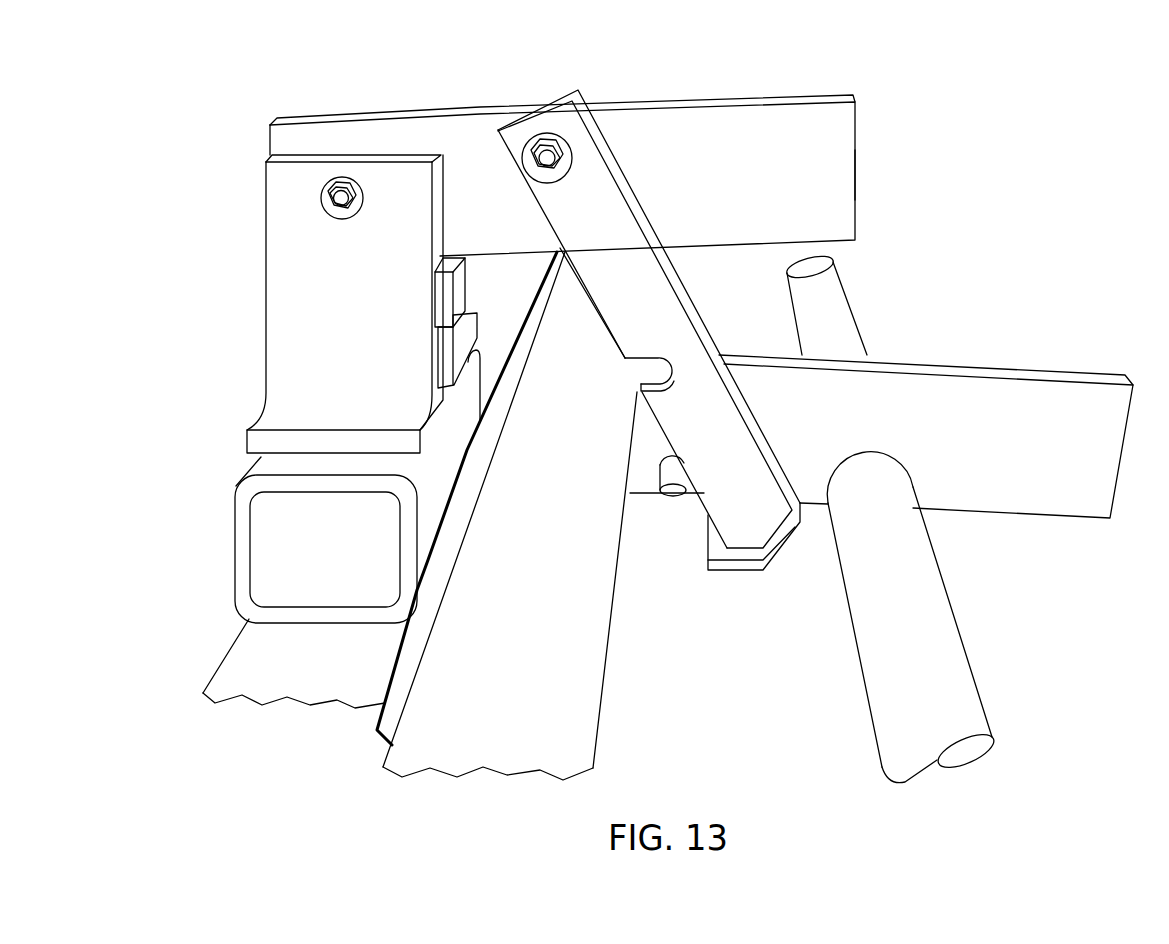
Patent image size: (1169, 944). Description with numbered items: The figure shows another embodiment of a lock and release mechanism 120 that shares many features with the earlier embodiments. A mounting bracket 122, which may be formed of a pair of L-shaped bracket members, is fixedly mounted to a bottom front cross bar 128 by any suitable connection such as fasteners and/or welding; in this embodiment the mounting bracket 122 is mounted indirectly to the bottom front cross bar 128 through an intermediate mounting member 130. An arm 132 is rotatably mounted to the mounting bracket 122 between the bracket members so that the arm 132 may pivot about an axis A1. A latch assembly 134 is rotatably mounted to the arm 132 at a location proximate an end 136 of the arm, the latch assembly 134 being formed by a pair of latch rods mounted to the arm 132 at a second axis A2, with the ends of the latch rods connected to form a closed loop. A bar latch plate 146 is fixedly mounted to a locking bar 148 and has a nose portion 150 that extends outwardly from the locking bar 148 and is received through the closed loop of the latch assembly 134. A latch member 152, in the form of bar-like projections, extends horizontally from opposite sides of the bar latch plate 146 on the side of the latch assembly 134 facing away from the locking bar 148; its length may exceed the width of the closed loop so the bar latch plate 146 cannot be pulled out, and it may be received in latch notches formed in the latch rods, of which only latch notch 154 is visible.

The lock and release mechanism 120 is at (970, 131).
The mounting bracket 122 is at (313, 304).
The bottom front cross bar 128 is at (225, 673).
The intermediate mounting member 130 is at (235, 555).
The arm 132 is at (740, 100).
The latch assembly 134 is at (649, 330).
The end of the arm 136 is at (855, 158).
The bar latch plate 146 is at (1003, 372).
The locking bar 148 is at (945, 621).
The nose portion 150 is at (638, 463).
The latch member 152 is at (672, 497).
The latch notch 154 is at (598, 312).
The axis A1 is at (243, 290).
The axis A2 is at (500, 243).